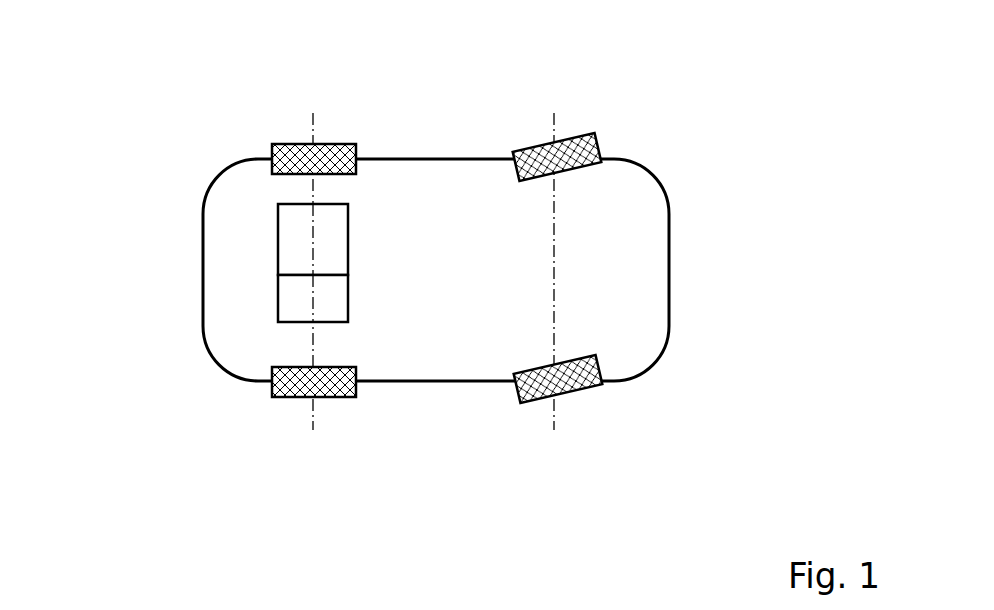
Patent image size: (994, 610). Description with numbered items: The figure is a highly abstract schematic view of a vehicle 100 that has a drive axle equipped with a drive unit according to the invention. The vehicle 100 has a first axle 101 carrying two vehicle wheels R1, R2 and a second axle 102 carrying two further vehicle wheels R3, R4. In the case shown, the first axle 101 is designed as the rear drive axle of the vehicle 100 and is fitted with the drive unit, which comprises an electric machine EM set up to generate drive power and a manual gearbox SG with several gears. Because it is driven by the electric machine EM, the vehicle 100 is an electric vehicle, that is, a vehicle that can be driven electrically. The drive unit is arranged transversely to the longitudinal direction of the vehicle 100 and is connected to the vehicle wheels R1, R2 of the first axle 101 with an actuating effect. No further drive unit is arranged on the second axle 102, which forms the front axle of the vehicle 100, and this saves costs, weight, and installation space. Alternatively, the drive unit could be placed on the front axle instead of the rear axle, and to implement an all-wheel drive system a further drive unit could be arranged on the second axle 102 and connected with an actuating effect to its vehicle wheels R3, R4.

The vehicle 100 is at (203, 133).
The first axle 101 is at (313, 446).
The second axle 102 is at (554, 446).
The manual gearbox SG is at (290, 237).
The electric machine EM is at (290, 300).
The vehicle wheel R1 is at (330, 145).
The vehicle wheel R2 is at (333, 397).
The vehicle wheel R3 is at (600, 143).
The vehicle wheel R4 is at (578, 384).